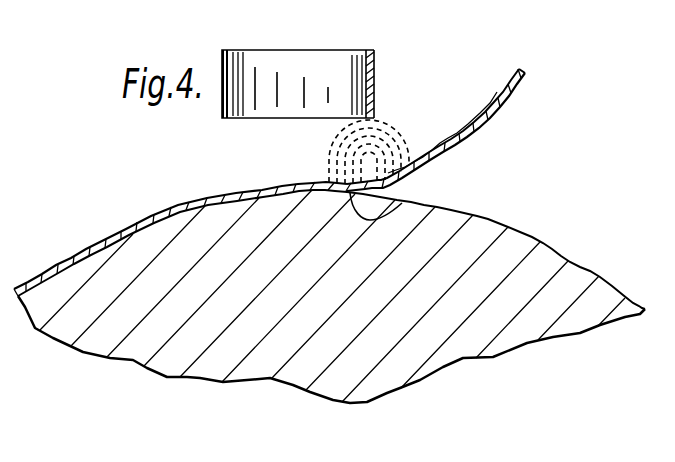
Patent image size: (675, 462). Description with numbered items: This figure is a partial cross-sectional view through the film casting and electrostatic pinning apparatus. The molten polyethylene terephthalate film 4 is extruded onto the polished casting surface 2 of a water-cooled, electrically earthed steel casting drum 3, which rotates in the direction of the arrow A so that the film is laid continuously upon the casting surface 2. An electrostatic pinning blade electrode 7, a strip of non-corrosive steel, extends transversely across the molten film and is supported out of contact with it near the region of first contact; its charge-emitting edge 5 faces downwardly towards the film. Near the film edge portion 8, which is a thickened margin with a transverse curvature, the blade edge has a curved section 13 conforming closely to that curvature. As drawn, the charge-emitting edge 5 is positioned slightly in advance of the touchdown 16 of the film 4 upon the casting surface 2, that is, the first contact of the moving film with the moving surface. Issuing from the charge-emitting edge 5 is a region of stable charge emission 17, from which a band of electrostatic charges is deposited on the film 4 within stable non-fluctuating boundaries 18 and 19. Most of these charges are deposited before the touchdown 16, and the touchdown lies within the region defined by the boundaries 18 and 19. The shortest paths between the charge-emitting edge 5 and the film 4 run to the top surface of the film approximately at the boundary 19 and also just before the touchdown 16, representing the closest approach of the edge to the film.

The polished casting surface 2 is at (496, 225).
The casting drum 3 is at (526, 281).
The molten film 4 is at (217, 193).
The charge-emitting edge 5 is at (374, 119).
The blade electrode 7 is at (374, 64).
The edge portion 8 is at (497, 92).
The curved section 13 is at (268, 63).
The touchdown 16 is at (402, 203).
The region of stable charge emission 17 is at (393, 128).
The stable non-fluctuating boundary 18 is at (330, 180).
The stable non-fluctuating boundary 19 is at (412, 152).
The arrow A is at (182, 184).